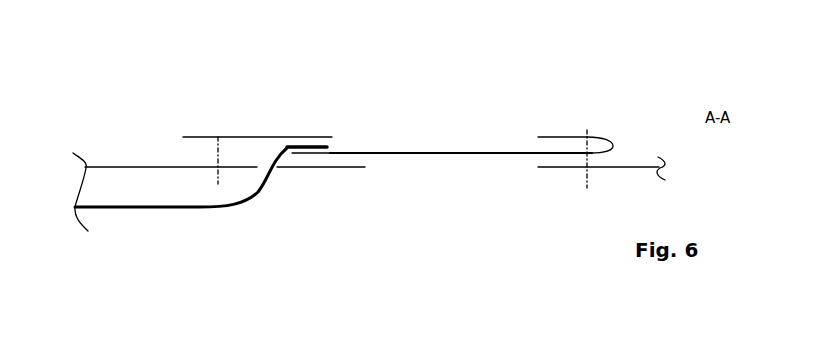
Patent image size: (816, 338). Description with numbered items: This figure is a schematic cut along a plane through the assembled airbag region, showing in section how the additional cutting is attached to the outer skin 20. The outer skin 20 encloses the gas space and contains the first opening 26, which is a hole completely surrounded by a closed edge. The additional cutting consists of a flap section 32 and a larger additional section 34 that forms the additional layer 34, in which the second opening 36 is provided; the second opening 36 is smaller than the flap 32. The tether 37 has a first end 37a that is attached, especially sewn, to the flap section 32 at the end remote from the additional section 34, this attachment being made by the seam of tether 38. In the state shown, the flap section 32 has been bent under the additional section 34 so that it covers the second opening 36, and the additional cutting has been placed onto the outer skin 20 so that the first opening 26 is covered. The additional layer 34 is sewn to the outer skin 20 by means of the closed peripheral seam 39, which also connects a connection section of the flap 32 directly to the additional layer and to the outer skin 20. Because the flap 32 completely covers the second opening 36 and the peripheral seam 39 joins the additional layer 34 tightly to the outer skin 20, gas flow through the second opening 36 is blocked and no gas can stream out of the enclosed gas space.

The outer skin 20 is at (122, 166).
The first opening 26 is at (397, 170).
The flap section 32 is at (498, 153).
The additional section 34 is at (198, 137).
The second opening 36 is at (458, 138).
The tether 37 is at (122, 210).
The first end 37a is at (288, 137).
The seam of tether 38 is at (313, 137).
The peripheral seam 39 is at (217, 130).